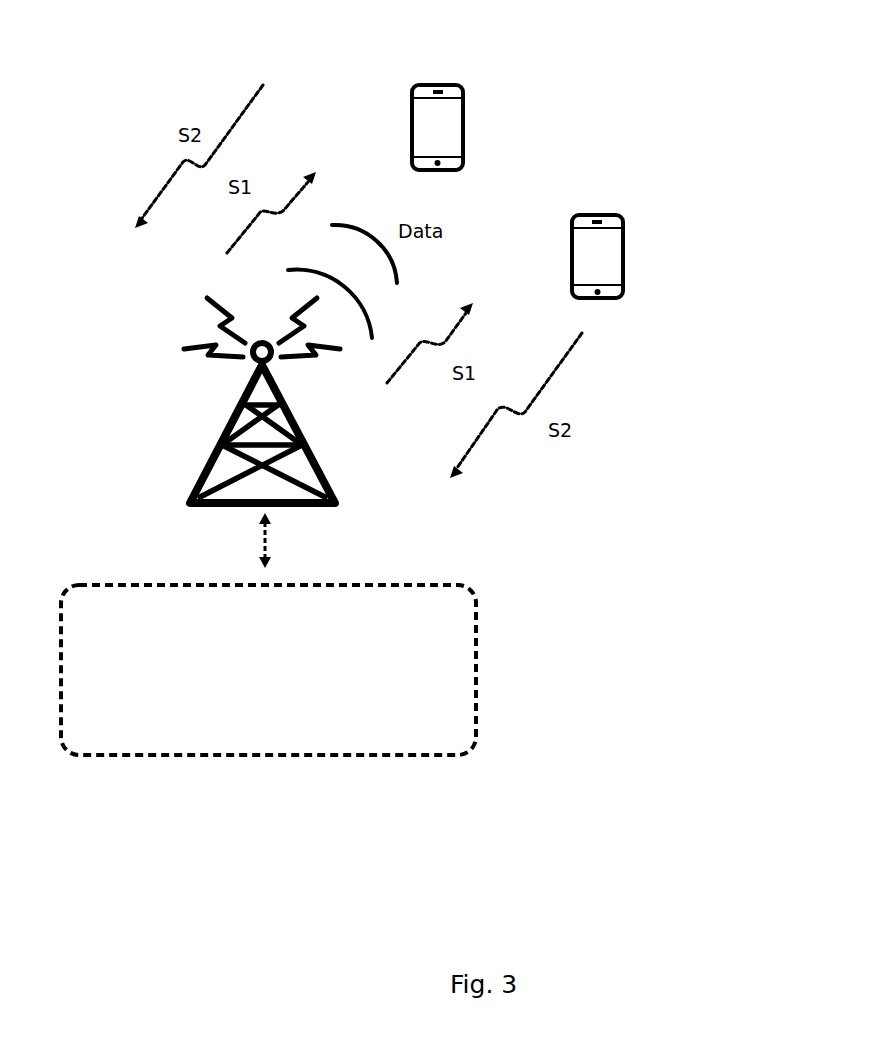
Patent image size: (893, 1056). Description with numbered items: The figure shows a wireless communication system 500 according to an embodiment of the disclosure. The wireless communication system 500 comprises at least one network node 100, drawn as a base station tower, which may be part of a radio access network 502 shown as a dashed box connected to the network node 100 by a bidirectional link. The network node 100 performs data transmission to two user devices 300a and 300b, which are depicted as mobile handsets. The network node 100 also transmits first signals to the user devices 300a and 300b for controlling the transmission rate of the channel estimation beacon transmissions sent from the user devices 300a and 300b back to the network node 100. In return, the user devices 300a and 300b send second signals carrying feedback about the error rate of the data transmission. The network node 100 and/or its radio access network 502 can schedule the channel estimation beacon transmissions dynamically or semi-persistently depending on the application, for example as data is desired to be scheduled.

The wireless communication system 500 is at (144, 77).
The network node 100 is at (200, 477).
The user device 300a is at (465, 125).
The user device 300b is at (625, 242).
The radio access network 502 is at (268, 670).